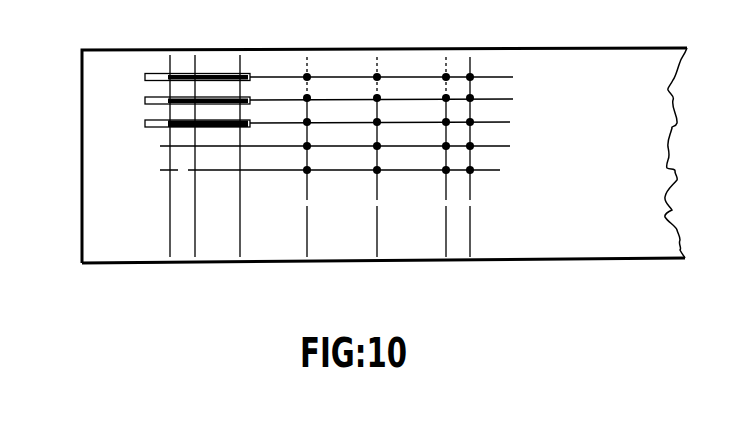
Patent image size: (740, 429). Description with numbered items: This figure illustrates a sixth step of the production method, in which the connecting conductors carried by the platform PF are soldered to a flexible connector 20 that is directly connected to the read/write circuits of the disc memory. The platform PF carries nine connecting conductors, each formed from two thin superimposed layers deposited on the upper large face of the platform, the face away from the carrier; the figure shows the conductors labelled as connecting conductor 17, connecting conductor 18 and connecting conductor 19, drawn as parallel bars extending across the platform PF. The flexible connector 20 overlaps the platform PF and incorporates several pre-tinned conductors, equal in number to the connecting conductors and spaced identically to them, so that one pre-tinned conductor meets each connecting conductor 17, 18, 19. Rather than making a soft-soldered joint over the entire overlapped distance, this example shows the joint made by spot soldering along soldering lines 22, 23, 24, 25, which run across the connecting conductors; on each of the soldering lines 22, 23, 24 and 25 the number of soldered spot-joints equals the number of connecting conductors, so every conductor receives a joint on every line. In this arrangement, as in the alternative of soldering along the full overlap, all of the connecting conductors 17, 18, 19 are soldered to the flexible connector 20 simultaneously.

The connecting conductor 17 is at (147, 124).
The connecting conductor 18 is at (147, 100).
The connecting conductor 19 is at (147, 72).
The flexible connector 20 is at (573, 72).
The soldering line 22 is at (305, 73).
The soldering line 23 is at (375, 73).
The soldering line 24 is at (444, 73).
The soldering line 25 is at (472, 73).
The platform PF is at (127, 247).